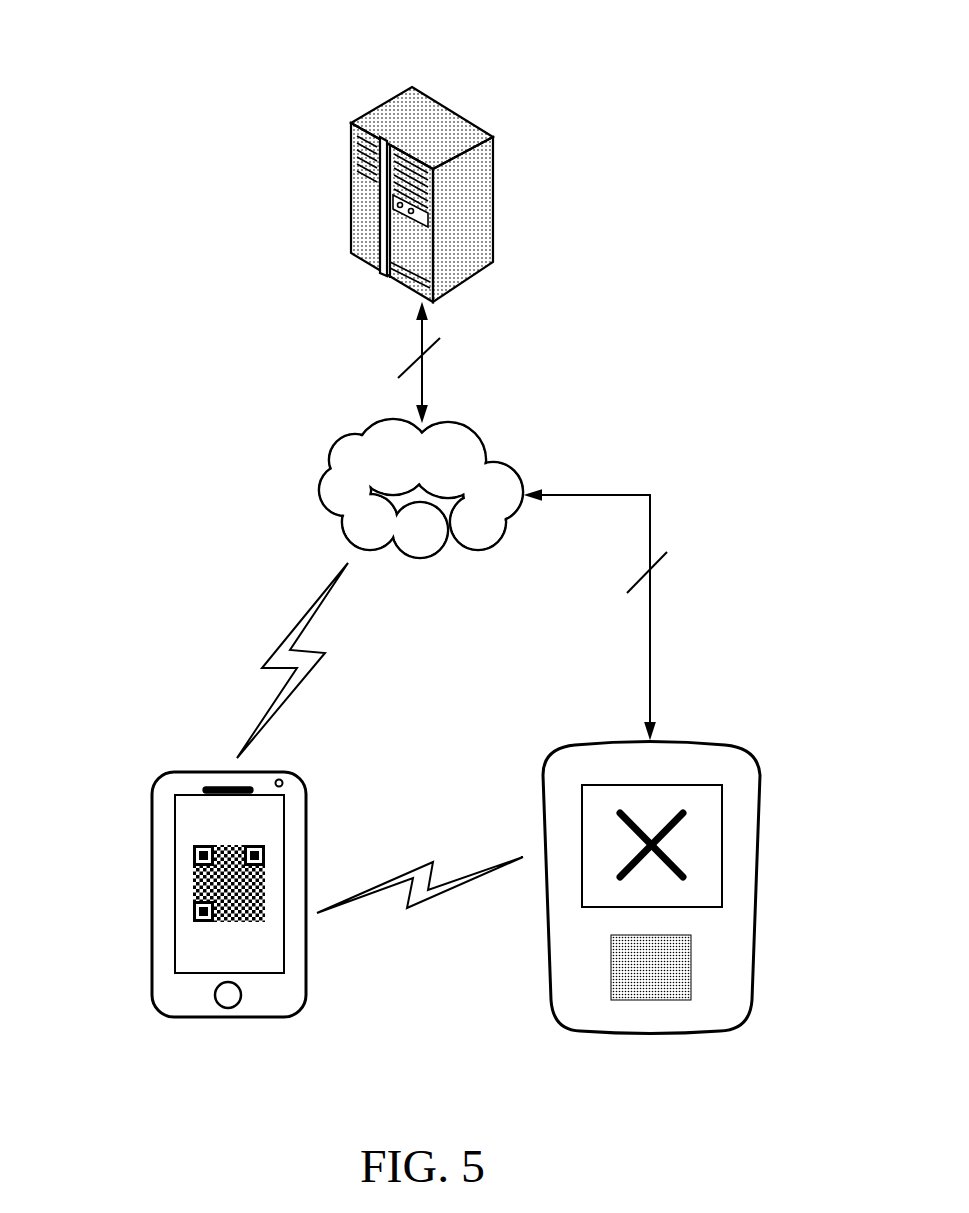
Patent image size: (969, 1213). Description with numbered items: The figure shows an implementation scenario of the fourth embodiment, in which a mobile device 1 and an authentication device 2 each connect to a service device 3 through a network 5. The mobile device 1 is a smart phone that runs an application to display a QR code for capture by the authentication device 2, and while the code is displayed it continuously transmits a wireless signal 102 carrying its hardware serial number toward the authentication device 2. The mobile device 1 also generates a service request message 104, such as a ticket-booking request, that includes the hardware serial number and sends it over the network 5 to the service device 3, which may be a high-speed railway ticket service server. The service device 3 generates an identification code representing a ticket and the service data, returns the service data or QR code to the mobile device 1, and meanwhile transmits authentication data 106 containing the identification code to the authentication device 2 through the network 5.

The mobile device 1 is at (187, 753).
The authentication device 2 is at (690, 728).
The service device 3 is at (480, 85).
The network 5 is at (485, 427).
The wireless signal 102 is at (490, 867).
The service request message 104 is at (328, 588).
The authentication data 106 is at (652, 570).